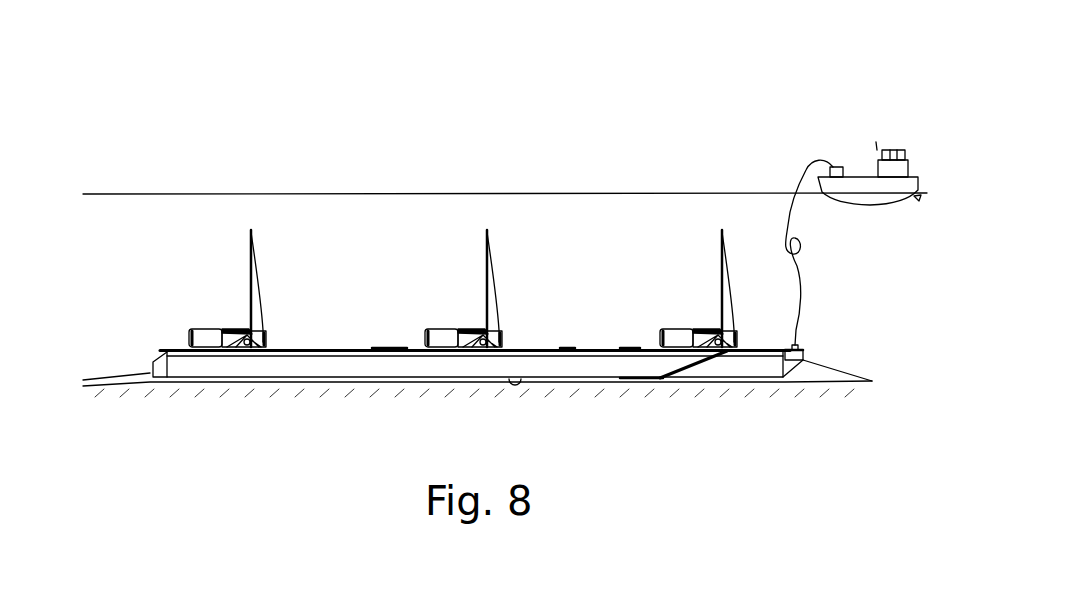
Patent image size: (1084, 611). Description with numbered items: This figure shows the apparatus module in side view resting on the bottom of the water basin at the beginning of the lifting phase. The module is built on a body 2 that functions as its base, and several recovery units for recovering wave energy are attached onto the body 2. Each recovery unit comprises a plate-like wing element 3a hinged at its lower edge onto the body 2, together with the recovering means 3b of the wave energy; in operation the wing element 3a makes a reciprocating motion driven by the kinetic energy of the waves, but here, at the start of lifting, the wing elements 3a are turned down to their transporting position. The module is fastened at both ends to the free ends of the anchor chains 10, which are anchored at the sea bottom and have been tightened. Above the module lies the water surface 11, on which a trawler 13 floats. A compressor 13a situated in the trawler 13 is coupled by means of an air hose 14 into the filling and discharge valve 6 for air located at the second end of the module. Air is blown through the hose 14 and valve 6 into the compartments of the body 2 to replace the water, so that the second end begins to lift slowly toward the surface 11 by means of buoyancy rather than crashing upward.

The body 2 is at (327, 348).
The wing element 3a is at (534, 288).
The recovering means 3b is at (459, 301).
The filling and discharge valve 6 is at (800, 350).
The anchor chains 10 is at (123, 372).
The surface 11 is at (307, 193).
The trawler 13 is at (893, 150).
The compressor 13a is at (840, 167).
The air hose 14 is at (800, 178).